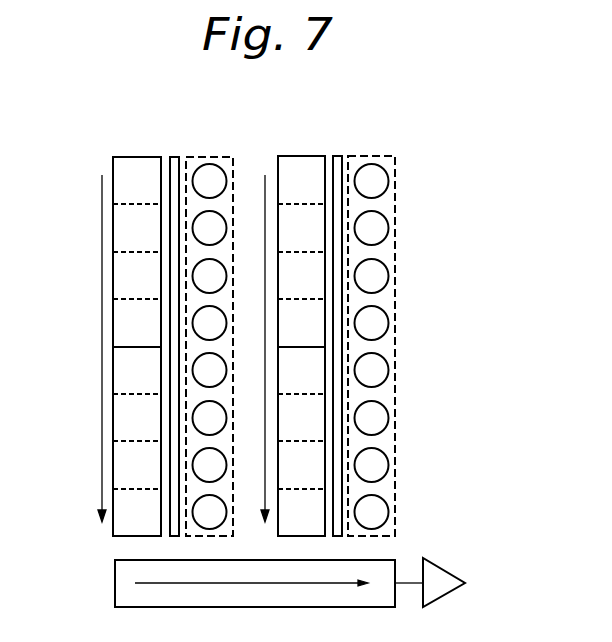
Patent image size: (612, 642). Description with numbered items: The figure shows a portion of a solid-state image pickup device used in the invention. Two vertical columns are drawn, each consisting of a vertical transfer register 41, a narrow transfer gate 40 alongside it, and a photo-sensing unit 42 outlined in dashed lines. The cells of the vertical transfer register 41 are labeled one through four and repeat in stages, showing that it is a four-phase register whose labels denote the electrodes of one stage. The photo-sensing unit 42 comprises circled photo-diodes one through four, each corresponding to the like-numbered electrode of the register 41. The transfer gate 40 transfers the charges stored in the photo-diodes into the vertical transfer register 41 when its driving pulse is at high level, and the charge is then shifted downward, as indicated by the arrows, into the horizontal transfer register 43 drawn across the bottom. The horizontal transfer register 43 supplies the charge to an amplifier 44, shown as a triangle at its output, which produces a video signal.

The transfer gate 40 is at (176, 156).
The vertical transfer register 41 is at (133, 157).
The photo-sensing unit 42 is at (211, 156).
The horizontal transfer register 43 is at (396, 560).
The amplifier 44 is at (446, 571).